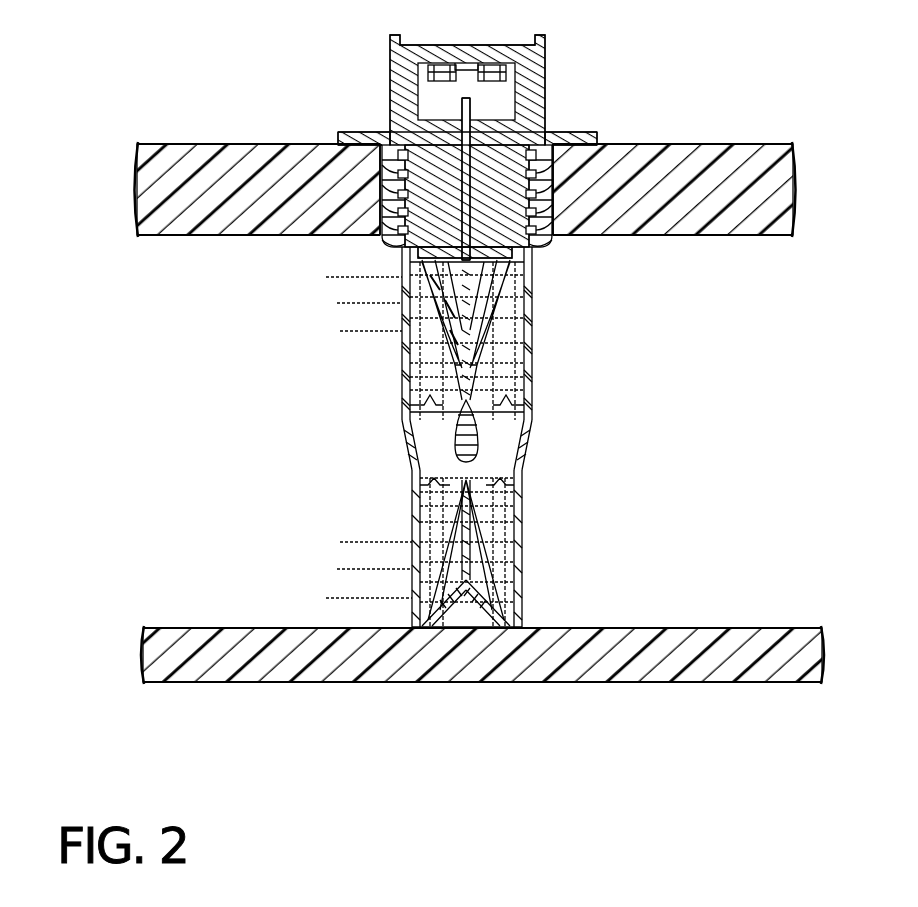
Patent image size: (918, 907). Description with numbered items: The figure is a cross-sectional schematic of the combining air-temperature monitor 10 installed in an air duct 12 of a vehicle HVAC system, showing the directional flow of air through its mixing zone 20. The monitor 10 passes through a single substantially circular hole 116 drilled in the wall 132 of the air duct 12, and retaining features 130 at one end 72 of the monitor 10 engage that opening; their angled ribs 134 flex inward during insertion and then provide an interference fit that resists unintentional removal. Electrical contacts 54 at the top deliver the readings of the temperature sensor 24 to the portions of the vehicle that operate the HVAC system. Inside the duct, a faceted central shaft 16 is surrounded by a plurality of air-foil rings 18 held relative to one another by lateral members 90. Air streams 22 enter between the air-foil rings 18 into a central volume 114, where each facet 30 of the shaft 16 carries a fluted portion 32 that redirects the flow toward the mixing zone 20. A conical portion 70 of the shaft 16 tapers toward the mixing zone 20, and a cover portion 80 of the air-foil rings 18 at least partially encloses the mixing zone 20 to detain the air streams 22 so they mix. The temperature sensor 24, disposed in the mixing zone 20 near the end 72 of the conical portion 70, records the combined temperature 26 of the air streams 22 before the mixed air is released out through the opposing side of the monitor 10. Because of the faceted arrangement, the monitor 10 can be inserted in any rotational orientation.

The combining air-temperature monitor 10 is at (220, 95).
The air duct 12 is at (175, 142).
The retaining features 130 is at (372, 200).
The electrical contacts 54 is at (430, 75).
The substantially circular hole 116 is at (553, 160).
The wall 132 is at (728, 162).
The ribs 134 is at (560, 184).
The central volume 114 is at (428, 296).
The facet 30 is at (495, 275).
The lateral members 90 is at (408, 362).
The fluted portion 32 is at (485, 297).
The air-foil rings 18 is at (405, 380).
The faceted central shaft 16 is at (470, 335).
The cover portion 80 is at (408, 425).
The combined temperature 26 is at (492, 428).
The mixing zone 20 is at (424, 438).
The temperature sensor 24 is at (480, 445).
The air streams 22 is at (368, 542).
The end 72 is at (480, 478).
The conical portion 70 is at (502, 557).